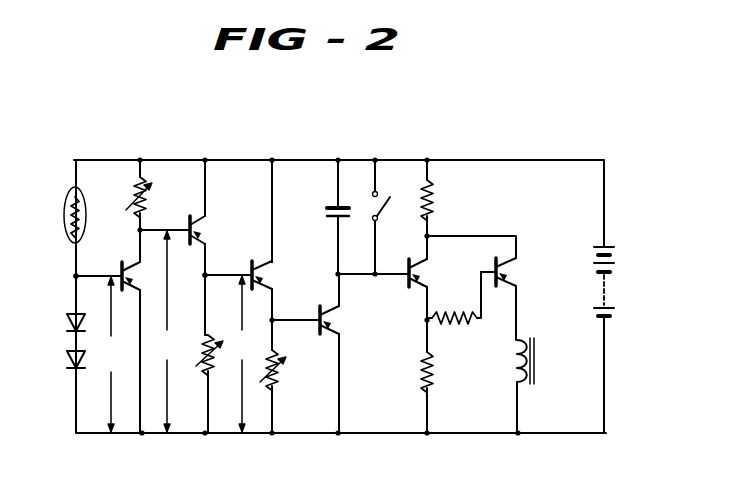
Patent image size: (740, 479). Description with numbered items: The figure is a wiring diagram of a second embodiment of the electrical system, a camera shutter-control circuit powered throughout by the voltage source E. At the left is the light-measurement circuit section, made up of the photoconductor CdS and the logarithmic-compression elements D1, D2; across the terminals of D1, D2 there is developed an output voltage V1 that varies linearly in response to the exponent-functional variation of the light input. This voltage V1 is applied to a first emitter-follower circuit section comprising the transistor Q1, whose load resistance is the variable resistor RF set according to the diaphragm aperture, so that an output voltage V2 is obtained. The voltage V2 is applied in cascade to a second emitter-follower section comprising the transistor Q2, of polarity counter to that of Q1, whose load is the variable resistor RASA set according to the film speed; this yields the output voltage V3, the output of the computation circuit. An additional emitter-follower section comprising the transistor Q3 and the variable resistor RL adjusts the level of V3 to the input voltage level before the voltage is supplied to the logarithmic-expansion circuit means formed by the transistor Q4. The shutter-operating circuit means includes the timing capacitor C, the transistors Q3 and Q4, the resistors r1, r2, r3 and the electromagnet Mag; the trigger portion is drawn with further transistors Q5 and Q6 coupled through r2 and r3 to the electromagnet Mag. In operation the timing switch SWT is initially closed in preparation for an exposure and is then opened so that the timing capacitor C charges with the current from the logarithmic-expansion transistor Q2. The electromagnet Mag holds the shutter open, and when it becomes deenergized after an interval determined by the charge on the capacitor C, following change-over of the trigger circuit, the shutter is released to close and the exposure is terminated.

The photoconductor CdS is at (64, 216).
The logarithmic-compression element D1 is at (67, 320).
The logarithmic-compression element D2 is at (67, 356).
The output voltage V1 is at (110, 354).
The output voltage V2 is at (166, 331).
The output voltage V3 is at (242, 354).
The variable resistor RF is at (149, 195).
The transistor Q1 is at (119, 331).
The logarithmic-expansion transistor Q2 is at (184, 217).
The transistor Q3 is at (250, 255).
The transistor Q4 is at (317, 353).
The transistor Q5 is at (429, 294).
The transistor Q6 is at (483, 288).
The variable resistor RASA is at (197, 370).
The variable resistor RL is at (283, 391).
The timing capacitor C is at (334, 218).
The timing switch SWT is at (374, 217).
The resistor r1 is at (434, 372).
The resistor r2 is at (434, 200).
The resistor r3 is at (456, 323).
The electromagnet Mag is at (516, 368).
The voltage source E is at (600, 283).